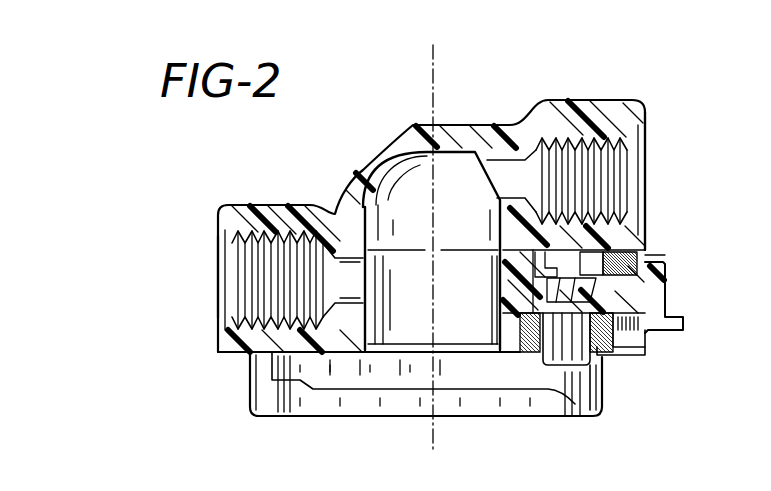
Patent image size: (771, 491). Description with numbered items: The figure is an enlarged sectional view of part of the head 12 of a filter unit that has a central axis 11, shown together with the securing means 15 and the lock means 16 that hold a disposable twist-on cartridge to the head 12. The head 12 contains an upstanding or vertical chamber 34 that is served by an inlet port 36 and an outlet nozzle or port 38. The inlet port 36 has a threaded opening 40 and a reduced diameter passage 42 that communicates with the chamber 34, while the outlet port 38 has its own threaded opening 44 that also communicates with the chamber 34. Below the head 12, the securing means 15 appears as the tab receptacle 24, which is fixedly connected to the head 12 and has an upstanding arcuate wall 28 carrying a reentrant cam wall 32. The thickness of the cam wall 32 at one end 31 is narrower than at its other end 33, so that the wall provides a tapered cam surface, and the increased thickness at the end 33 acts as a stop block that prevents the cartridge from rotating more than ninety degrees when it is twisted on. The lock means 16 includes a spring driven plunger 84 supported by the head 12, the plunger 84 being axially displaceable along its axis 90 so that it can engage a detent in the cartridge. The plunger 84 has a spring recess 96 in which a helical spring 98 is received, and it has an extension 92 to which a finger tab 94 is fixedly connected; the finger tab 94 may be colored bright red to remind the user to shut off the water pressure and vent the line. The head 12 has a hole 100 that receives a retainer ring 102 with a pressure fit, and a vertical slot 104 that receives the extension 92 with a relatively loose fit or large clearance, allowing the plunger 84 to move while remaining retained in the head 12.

The axis 11 is at (436, 75).
The head 12 is at (441, 226).
The securing means 15 is at (250, 389).
The lock means 16 is at (687, 292).
The tab receptacle 24 is at (600, 417).
The upstanding arcuate wall 28 is at (457, 375).
The end 31 is at (563, 420).
The reentrant cam wall 32 is at (385, 408).
The end 33 is at (295, 403).
The vertical chamber 34 is at (395, 172).
The inlet port 36 is at (232, 203).
The outlet port 38 is at (647, 113).
The threaded opening 40 is at (240, 260).
The reduced diameter passage 42 is at (340, 286).
The threaded opening 44 is at (625, 176).
The spring driven plunger 84 is at (598, 383).
The axis 90 is at (537, 363).
The extension 92 is at (643, 255).
The finger tab 94 is at (668, 316).
The spring recess 96 is at (560, 282).
The helical spring 98 is at (540, 258).
The hole 100 is at (522, 318).
The retainer ring 102 is at (600, 357).
The vertical slot 104 is at (627, 337).